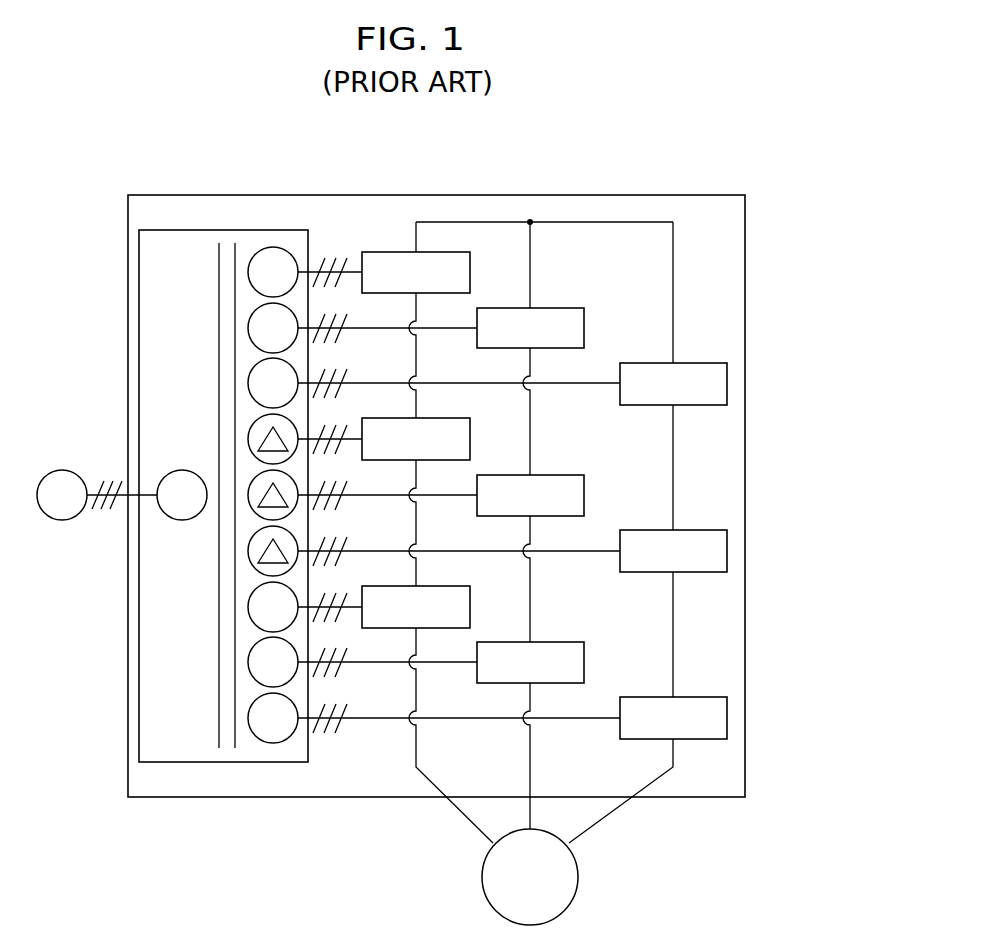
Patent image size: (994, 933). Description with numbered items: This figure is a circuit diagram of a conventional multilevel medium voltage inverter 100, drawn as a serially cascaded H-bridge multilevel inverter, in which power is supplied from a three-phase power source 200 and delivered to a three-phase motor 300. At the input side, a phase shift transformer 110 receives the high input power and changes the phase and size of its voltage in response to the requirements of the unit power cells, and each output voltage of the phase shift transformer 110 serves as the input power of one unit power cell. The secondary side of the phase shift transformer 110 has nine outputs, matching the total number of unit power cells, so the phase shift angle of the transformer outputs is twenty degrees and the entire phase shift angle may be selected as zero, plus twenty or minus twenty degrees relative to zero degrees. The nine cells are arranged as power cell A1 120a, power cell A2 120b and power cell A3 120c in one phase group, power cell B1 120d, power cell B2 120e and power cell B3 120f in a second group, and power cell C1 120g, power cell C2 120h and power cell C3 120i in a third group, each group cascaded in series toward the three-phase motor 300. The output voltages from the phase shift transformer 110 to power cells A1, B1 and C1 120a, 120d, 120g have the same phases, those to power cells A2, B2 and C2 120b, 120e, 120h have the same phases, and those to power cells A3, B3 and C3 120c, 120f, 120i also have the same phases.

The multilevel medium voltage inverter 100 is at (683, 195).
The phase shift transformer 110 is at (266, 230).
The power cell A1 120a is at (470, 262).
The power cell A2 120b is at (470, 428).
The power cell A3 120c is at (470, 596).
The power cell B1 120d is at (560, 308).
The power cell B2 120e is at (560, 475).
The power cell B3 120f is at (560, 642).
The power cell C1 120g is at (723, 345).
The power cell C2 120h is at (723, 512).
The power cell C3 120i is at (723, 679).
The three-phase power source 200 is at (64, 470).
The three-phase motor 300 is at (578, 873).